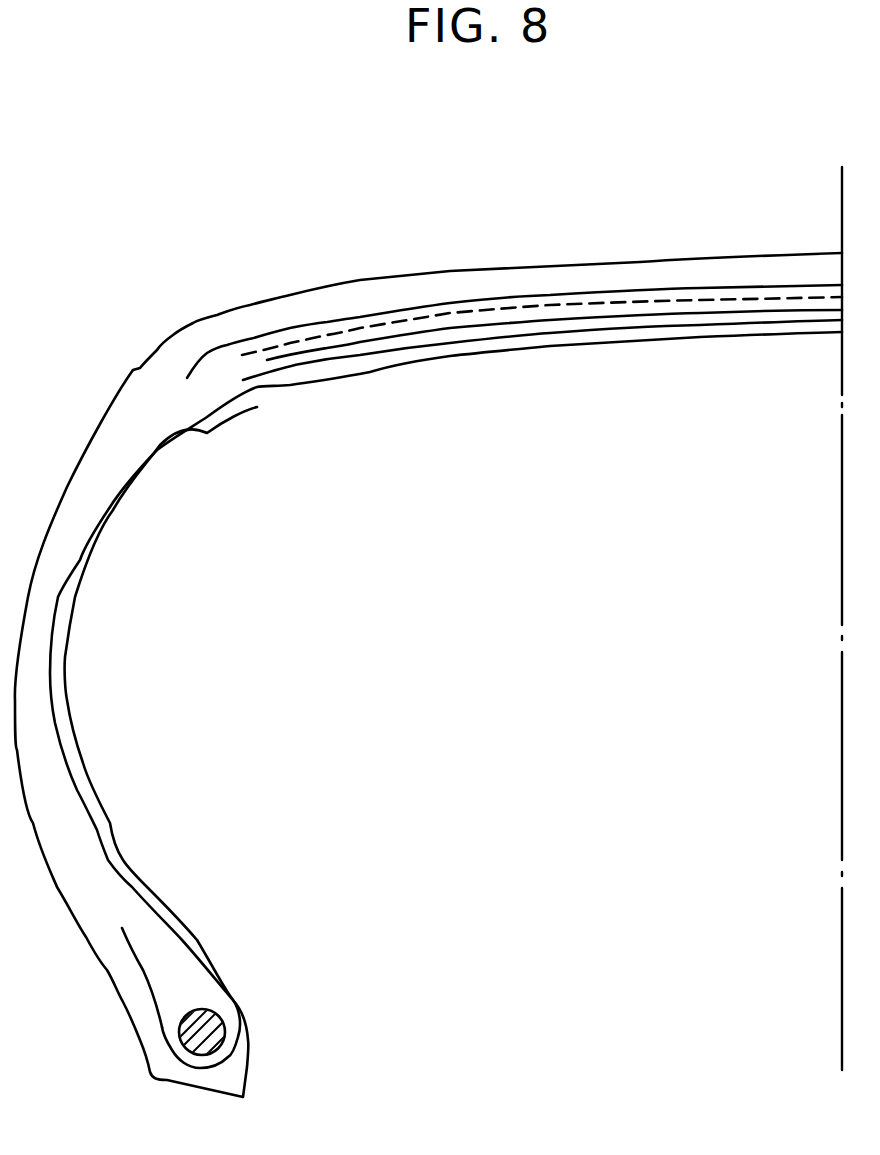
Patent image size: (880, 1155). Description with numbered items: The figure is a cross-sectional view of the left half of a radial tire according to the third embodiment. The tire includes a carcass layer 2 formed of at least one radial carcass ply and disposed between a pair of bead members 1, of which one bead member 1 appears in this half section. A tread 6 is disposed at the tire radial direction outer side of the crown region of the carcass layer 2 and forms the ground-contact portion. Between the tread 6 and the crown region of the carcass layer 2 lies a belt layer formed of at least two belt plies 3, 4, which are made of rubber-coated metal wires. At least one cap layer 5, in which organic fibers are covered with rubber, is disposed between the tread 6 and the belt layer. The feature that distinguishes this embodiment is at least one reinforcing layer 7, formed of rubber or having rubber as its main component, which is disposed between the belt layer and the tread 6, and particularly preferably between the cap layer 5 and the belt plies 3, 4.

The bead member 1 is at (225, 1027).
The carcass layer 2 is at (95, 813).
The belt ply 3 is at (652, 328).
The belt ply 4 is at (518, 323).
The cap layer 5 is at (228, 345).
The tread 6 is at (760, 270).
The reinforcing layer 7 is at (398, 324).